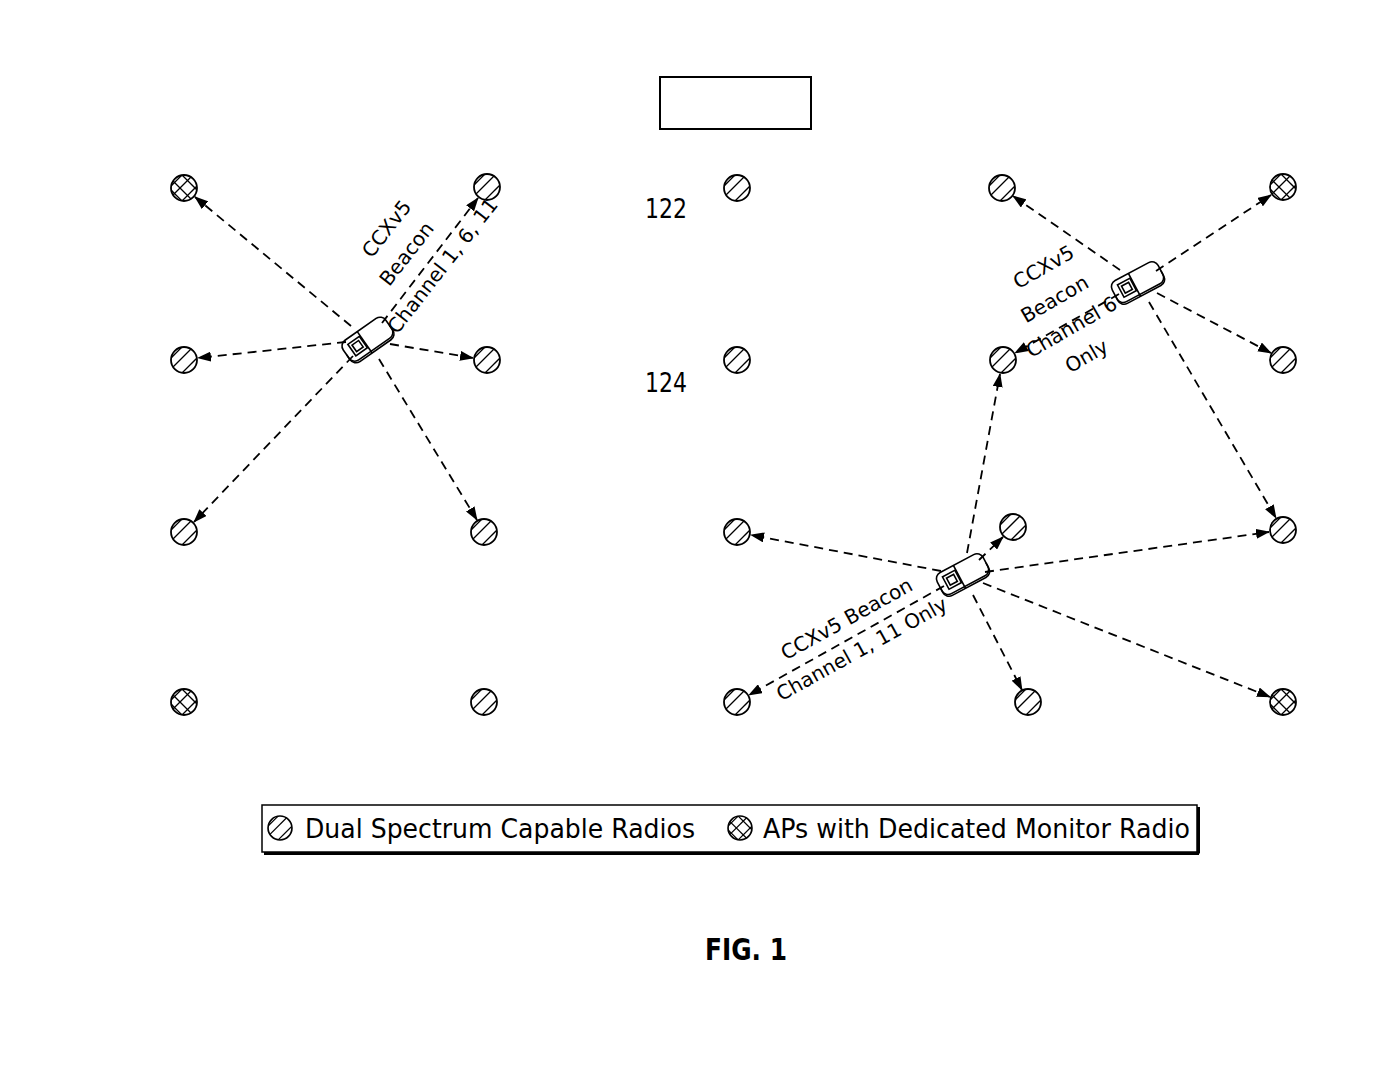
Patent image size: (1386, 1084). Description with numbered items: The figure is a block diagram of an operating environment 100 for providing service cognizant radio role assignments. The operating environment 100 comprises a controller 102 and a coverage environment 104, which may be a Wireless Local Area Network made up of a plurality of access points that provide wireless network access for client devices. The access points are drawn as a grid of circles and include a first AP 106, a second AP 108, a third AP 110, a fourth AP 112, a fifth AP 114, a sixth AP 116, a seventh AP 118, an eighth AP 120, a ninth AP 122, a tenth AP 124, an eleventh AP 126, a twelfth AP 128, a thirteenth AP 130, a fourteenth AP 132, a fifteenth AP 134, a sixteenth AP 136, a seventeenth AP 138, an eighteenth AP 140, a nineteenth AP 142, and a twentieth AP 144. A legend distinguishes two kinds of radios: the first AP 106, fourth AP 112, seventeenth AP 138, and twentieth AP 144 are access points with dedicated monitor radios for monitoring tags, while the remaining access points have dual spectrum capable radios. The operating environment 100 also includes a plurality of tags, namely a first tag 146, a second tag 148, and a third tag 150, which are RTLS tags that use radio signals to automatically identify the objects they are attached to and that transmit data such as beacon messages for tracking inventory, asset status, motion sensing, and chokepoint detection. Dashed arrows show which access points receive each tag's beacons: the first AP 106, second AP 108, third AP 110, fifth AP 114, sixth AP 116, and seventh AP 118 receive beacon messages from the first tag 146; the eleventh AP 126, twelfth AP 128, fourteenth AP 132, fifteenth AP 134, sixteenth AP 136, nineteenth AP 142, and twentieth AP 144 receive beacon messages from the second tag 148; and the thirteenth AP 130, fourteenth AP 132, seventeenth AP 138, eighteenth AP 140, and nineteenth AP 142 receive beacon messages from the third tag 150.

The operating environment 100 is at (302, 80).
The controller 102 is at (742, 77).
The coverage environment 104 is at (879, 176).
The first AP 106 is at (172, 193).
The second AP 108 is at (172, 366).
The third AP 110 is at (172, 538).
The fourth AP 112 is at (172, 706).
The fifth AP 114 is at (498, 196).
The sixth AP 116 is at (498, 369).
The seventh AP 118 is at (495, 541).
The eighth AP 120 is at (495, 711).
The ninth AP 122 is at (725, 194).
The tenth AP 124 is at (725, 366).
The eleventh AP 126 is at (725, 538).
The twelfth AP 128 is at (725, 706).
The thirteenth AP 130 is at (990, 194).
The fourteenth AP 132 is at (1004, 375).
The fifteenth AP 134 is at (1026, 521).
The sixteenth AP 136 is at (1015, 708).
The seventeenth AP 138 is at (1294, 196).
The eighteenth AP 140 is at (1294, 369).
The nineteenth AP 142 is at (1294, 539).
The twentieth AP 144 is at (1271, 708).
The first tag 146 is at (371, 362).
The second tag 148 is at (950, 563).
The third tag 150 is at (1146, 262).